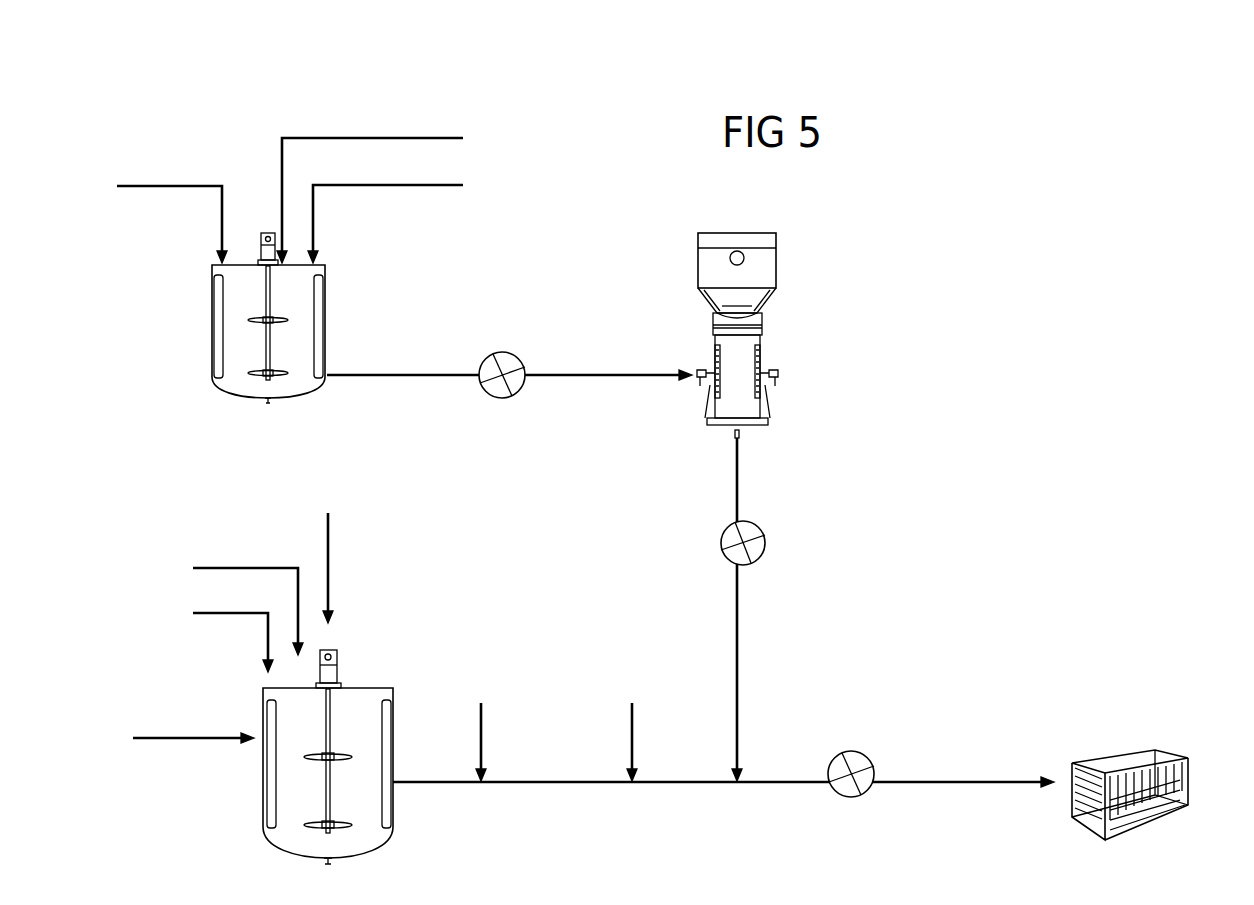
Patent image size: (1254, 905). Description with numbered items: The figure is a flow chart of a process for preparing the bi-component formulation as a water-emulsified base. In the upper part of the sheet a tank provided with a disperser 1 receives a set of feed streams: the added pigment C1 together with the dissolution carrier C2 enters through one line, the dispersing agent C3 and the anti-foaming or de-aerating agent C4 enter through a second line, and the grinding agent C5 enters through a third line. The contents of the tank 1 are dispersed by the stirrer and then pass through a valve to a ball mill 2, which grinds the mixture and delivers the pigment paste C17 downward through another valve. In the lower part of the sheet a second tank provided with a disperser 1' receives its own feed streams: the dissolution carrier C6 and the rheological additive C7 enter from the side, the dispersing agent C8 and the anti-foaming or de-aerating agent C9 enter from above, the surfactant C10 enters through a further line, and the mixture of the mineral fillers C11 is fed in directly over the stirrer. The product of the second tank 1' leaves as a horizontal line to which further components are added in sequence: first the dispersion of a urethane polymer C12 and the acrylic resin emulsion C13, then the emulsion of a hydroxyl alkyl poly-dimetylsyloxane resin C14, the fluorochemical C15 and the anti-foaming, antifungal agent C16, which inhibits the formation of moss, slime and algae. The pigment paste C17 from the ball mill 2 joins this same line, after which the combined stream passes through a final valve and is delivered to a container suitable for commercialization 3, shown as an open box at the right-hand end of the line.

The tank provided with a disperser 1 is at (249, 318).
The tank provided with a disperser 1' is at (308, 757).
The ball mill 2 is at (756, 335).
The container suitable for commercialization 3 is at (1150, 795).
The added pigment C1 is at (172, 210).
The dissolution carrier C2 is at (172, 210).
The dispersing agent C3 is at (370, 186).
The anti-foaming or de-aerating agent C4 is at (370, 186).
The grinding agent C5 is at (385, 209).
The dissolution carrier C6 is at (193, 725).
The rheological additive C7 is at (193, 725).
The dispersing agent C8 is at (233, 628).
The anti-foaming or de-aerating agent C9 is at (233, 628).
The surfactant C10 is at (248, 597).
The mixture of the mineral fillers C11 is at (318, 553).
The dispersion of a urethane polymer C12 is at (480, 728).
The acrylic resin emulsion C13 is at (480, 728).
The emulsion of a hydroxyl alkyl poly-dimetylsyloxane resin C14 is at (640, 728).
The fluorochemical C15 is at (640, 728).
The anti-foaming, antifungal agent C16 is at (640, 728).
The pigment paste C17 is at (755, 609).